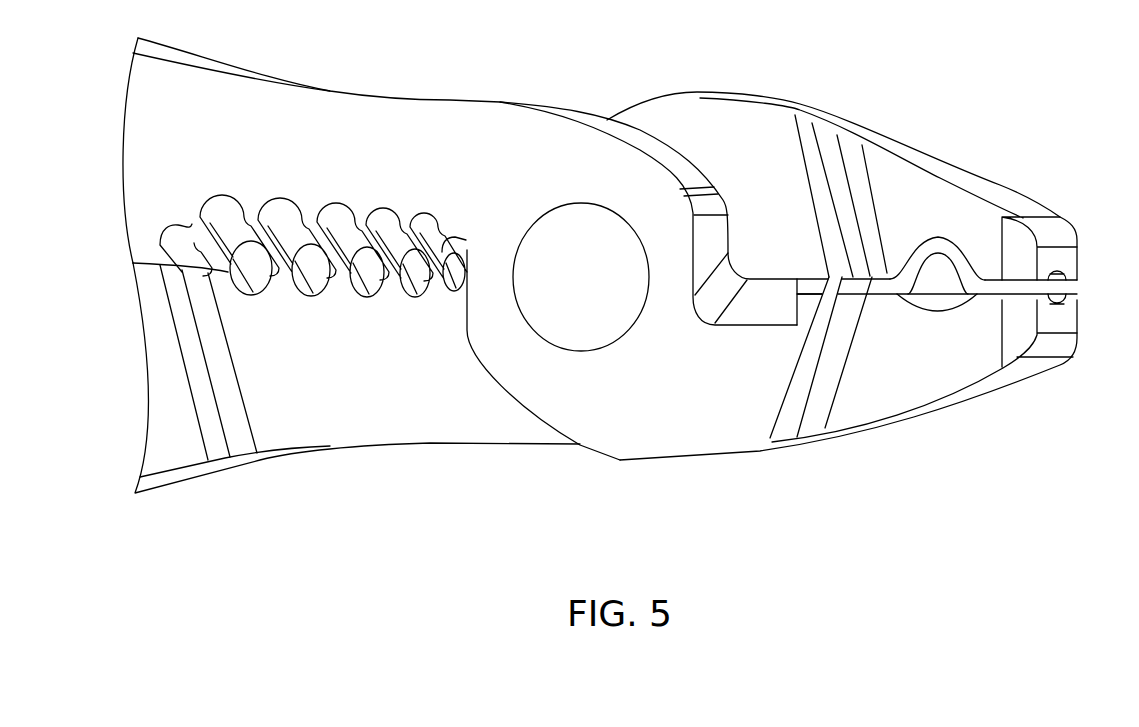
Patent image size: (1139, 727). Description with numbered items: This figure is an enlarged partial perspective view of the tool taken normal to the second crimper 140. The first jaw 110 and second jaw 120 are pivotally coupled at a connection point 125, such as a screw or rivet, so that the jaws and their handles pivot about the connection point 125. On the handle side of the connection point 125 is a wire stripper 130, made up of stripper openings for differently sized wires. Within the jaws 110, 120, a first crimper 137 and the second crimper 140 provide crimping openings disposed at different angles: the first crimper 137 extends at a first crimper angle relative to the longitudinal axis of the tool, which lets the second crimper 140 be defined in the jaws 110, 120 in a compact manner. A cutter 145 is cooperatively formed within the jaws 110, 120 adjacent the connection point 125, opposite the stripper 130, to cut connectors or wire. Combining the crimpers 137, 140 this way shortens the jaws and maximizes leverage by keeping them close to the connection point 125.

The first jaw 110 is at (832, 407).
The second jaw 120 is at (723, 112).
The connection point 125 is at (543, 232).
The wire stripper 130 is at (372, 275).
The first crimper 137 is at (1053, 297).
The second crimper 140 is at (933, 273).
The cutter 145 is at (807, 284).